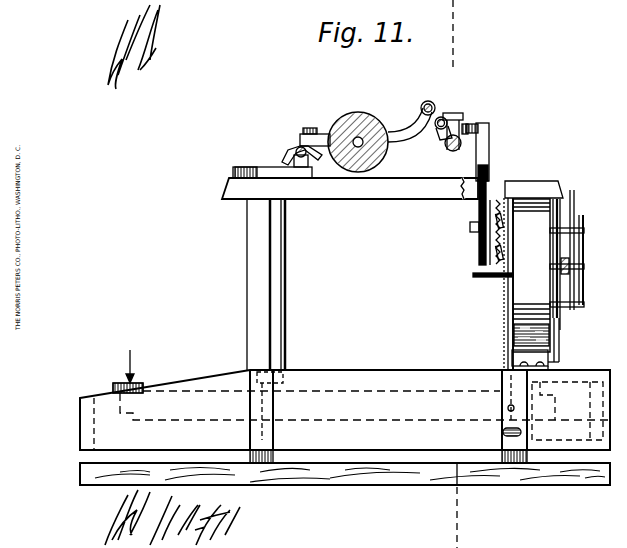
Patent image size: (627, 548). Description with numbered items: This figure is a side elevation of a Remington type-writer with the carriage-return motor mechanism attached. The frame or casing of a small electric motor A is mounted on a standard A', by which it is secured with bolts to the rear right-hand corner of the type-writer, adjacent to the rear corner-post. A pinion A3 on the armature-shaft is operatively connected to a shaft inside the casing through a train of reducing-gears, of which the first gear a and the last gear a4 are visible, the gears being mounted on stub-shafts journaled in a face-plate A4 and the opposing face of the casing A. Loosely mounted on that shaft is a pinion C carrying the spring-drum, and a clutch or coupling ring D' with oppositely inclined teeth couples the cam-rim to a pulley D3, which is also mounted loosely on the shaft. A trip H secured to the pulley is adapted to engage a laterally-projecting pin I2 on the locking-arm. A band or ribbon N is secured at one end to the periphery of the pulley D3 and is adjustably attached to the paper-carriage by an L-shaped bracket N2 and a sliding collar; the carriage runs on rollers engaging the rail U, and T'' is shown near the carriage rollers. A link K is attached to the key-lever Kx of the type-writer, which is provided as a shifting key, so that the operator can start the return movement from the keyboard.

The pulley shaft pin T'' is at (462, 110).
The L-shaped bracket N2 is at (490, 148).
The rail U is at (451, 143).
The band or ribbon N is at (487, 181).
The clutch or coupling ring D' is at (528, 264).
The pinion C is at (511, 191).
The trip H is at (478, 207).
The reducing-gear a4 is at (557, 218).
The face-plate A4 is at (564, 241).
The pulley D3 is at (479, 255).
The motor frame or casing A is at (518, 275).
The pinion A3 is at (565, 273).
The laterally-projecting pin I2 is at (462, 297).
The reducing-gear a is at (563, 300).
The link K is at (512, 350).
The standard A' is at (561, 340).
The key-lever Kx is at (455, 420).